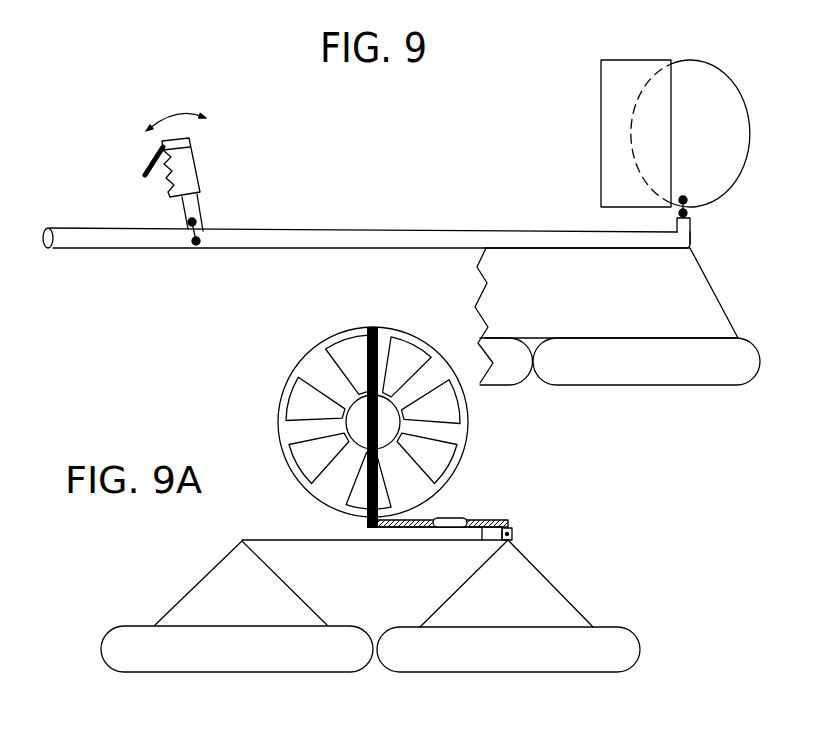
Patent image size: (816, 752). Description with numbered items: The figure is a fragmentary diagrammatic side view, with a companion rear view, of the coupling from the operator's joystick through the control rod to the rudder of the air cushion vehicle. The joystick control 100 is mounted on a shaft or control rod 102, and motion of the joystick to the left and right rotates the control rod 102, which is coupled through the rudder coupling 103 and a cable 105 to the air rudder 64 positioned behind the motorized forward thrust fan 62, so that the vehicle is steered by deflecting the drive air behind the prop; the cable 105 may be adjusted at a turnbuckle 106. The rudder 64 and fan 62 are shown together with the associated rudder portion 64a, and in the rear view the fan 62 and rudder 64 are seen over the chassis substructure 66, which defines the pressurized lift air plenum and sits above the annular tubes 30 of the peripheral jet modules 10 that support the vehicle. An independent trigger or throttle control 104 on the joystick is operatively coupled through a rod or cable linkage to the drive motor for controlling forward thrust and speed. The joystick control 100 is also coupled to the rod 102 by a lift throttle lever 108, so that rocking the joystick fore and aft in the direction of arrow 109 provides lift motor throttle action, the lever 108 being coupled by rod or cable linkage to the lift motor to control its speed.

In FIG. 9, the annular peripheral jet module 10 is at (612, 388).
In FIG. 9A, the annular peripheral jet module 10 is at (292, 683).
In FIG. 9, the annular tube 30 is at (653, 387).
In FIG. 9A, the annular tube 30 is at (220, 672).
In FIG. 9, the forward thrust fan 62 is at (601, 170).
In FIG. 9A, the forward thrust fan 62 is at (465, 454).
In FIG. 9, the air rudder 64 is at (750, 140).
In FIG. 9A, the air rudder 64 is at (368, 330).
In FIG. 9, the fan wheel 64a is at (630, 133).
In FIG. 9, the chassis substructure 66 is at (724, 296).
In FIG. 9A, the chassis substructure 66 is at (374, 583).
In FIG. 9, the joystick control 100 is at (200, 168).
In FIG. 9, the control rod 102 is at (361, 212).
In FIG. 9A, the control rod 102 is at (375, 530).
In FIG. 9, the rudder coupling 103 is at (676, 231).
In FIG. 9A, the rudder coupling 103 is at (513, 532).
In FIG. 9, the trigger throttle control 104 is at (158, 148).
In FIG. 9, the cable 105 is at (686, 207).
In FIG. 9A, the cable 105 is at (482, 528).
In FIG. 9A, the turnbuckle 106 is at (458, 508).
In FIG. 9, the lift throttle lever 108 is at (187, 231).
In FIG. 9, the arrow 109 is at (193, 100).